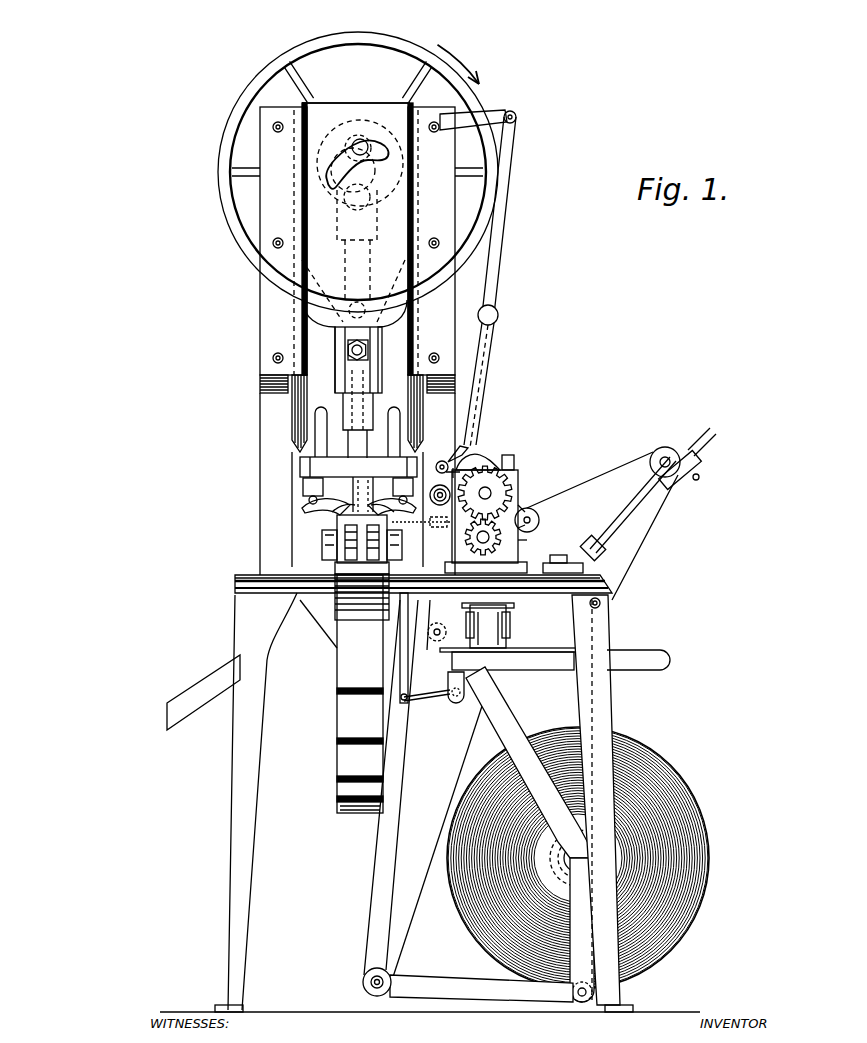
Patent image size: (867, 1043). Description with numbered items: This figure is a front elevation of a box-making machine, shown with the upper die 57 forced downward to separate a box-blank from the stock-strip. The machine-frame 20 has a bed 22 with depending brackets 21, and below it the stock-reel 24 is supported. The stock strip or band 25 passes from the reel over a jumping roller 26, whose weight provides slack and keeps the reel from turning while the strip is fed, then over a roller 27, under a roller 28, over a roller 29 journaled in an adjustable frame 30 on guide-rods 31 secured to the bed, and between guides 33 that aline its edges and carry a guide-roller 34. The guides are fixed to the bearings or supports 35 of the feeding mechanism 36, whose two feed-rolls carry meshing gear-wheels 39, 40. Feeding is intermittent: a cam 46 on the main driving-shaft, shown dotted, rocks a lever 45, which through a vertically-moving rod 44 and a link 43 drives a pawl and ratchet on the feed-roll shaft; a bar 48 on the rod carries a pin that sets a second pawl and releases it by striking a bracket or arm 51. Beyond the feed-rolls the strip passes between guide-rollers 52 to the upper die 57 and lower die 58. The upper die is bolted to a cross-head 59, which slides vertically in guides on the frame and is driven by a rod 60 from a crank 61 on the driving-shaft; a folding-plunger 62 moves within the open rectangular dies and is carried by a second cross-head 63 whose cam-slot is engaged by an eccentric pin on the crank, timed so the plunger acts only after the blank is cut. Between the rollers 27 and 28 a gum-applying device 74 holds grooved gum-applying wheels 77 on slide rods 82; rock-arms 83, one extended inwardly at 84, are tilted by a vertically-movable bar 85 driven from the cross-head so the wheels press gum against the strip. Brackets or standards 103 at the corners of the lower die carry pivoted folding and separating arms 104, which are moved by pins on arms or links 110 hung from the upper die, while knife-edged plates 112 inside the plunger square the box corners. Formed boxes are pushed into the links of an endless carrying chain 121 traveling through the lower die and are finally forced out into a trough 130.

The machine-frame 20 is at (228, 547).
The brackets 21 is at (504, 727).
The bed 22 is at (590, 581).
The stock-reel 24 is at (698, 816).
The stock strip or band 25 is at (391, 787).
The jumping roller 26 is at (468, 972).
The roller 27 is at (428, 633).
The roller 28 is at (606, 607).
The roller 29 is at (665, 447).
The sliding or adjustable frame 30 is at (687, 455).
The guide-rods 31 is at (634, 510).
The guides 33 is at (539, 520).
The guide-roller 34 is at (520, 510).
The bearings or supports 35 is at (516, 552).
The band-feeding mechanism 36 is at (496, 521).
The gear-wheel 39 is at (503, 487).
The gear-wheel 40 is at (488, 542).
The link 43 is at (493, 464).
The vertically-moving rod 44 is at (508, 293).
The lever 45 is at (500, 112).
The cam 46 is at (337, 133).
The bar 48 is at (484, 380).
The bracket or arm 51 is at (458, 456).
The guide-rollers 52 is at (432, 512).
The upper die 57 is at (328, 503).
The lower die 58 is at (337, 526).
The cross-head or slide 59 is at (313, 396).
The rod 60 is at (355, 266).
The crank 61 is at (383, 202).
The folding-plunger 62 is at (347, 443).
The cross-head or slide 63 is at (366, 113).
The gum-applying device 74 is at (497, 625).
The gum-applying wheels 77 is at (505, 648).
The slide rods or bars 82 is at (511, 659).
The rock-arms 83 is at (462, 704).
The inward extension 84 is at (428, 696).
The vertically-movable bar 85 is at (410, 662).
The brackets or standards 103 is at (322, 551).
The folding and separating arms 104 is at (330, 509).
The arms or links 110 is at (358, 484).
The knife-edged plates 112 is at (362, 567).
The endless carrying belt or chain 121 is at (337, 665).
The trough 130 is at (213, 672).